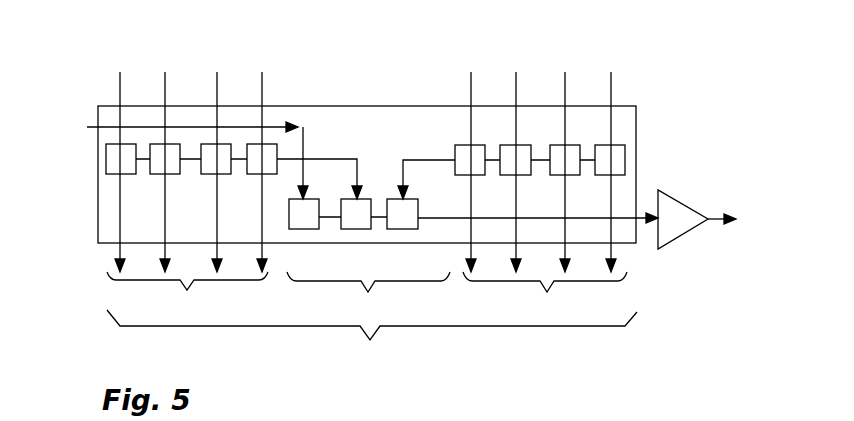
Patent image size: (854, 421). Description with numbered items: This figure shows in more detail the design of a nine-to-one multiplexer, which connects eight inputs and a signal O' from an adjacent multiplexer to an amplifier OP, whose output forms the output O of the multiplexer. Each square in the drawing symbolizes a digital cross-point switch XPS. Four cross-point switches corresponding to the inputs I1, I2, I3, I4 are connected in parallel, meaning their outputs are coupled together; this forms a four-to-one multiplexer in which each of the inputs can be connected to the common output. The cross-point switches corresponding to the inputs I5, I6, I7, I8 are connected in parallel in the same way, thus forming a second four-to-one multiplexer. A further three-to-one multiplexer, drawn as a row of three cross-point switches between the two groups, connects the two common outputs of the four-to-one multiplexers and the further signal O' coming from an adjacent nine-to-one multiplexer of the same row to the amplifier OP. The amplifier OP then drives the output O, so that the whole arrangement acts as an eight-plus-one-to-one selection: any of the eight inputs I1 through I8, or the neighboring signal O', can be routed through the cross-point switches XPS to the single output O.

The input I1 is at (118, 157).
The input I2 is at (163, 157).
The input I3 is at (215, 157).
The input I4 is at (260, 157).
The input I5 is at (469, 157).
The input I6 is at (514, 157).
The input I7 is at (563, 157).
The input I8 is at (609, 157).
The output from adjacent multiplexer O' is at (181, 155).
The digital cross-point switch XPS is at (620, 147).
The amplifier OP is at (675, 198).
The output O is at (736, 219).